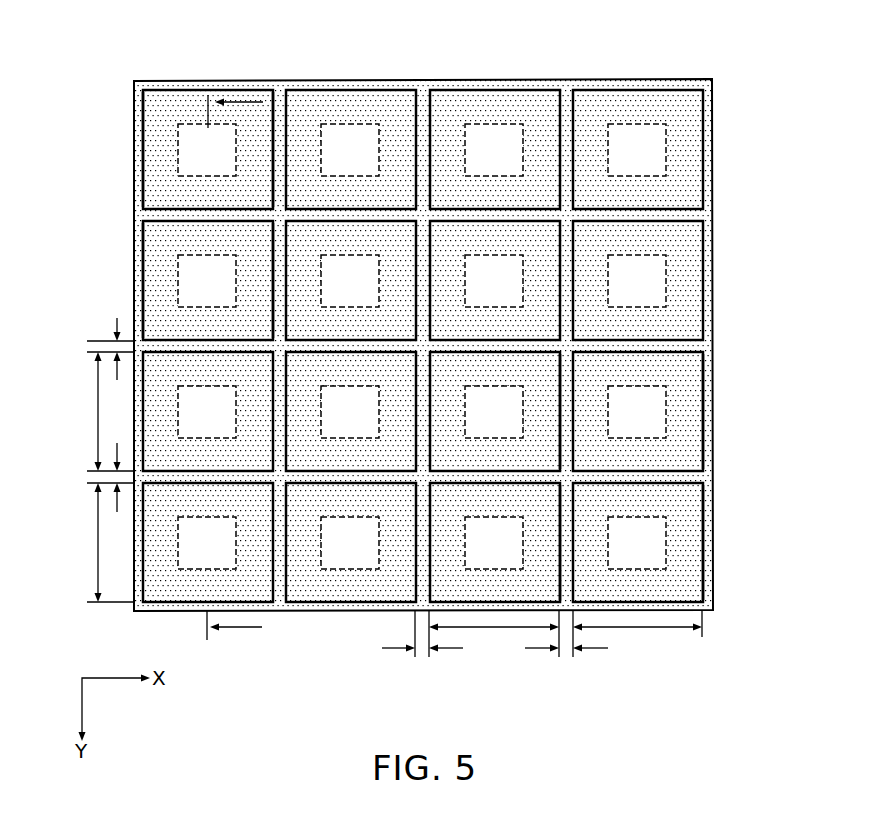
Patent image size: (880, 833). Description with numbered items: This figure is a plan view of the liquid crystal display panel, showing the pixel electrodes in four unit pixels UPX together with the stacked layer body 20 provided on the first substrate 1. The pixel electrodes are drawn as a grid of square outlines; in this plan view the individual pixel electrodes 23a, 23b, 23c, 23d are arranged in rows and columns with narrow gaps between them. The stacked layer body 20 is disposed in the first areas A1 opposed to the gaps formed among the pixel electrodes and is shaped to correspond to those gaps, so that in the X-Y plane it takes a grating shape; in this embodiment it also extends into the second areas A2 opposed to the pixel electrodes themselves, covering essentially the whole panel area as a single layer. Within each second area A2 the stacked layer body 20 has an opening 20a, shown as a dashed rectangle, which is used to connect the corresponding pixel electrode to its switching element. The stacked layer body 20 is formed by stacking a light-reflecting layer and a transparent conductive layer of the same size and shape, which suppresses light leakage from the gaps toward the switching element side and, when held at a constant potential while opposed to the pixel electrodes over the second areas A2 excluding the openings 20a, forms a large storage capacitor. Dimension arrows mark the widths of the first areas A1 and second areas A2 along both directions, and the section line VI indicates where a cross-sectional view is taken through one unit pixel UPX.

The first substrate 1 is at (690, 66).
The stacked layer body 20 is at (421, 93).
The openings 20a is at (327, 162).
The first edge portion 23a is at (142, 128).
The second edge portion 23b is at (142, 245).
The third edge portion 23c is at (283, 198).
The fourth edge portion 23d is at (283, 323).
The unit pixel UPX is at (280, 82).
The section line VI is at (245, 102).
The first areas A1 is at (115, 343).
The second areas A2 is at (98, 410).